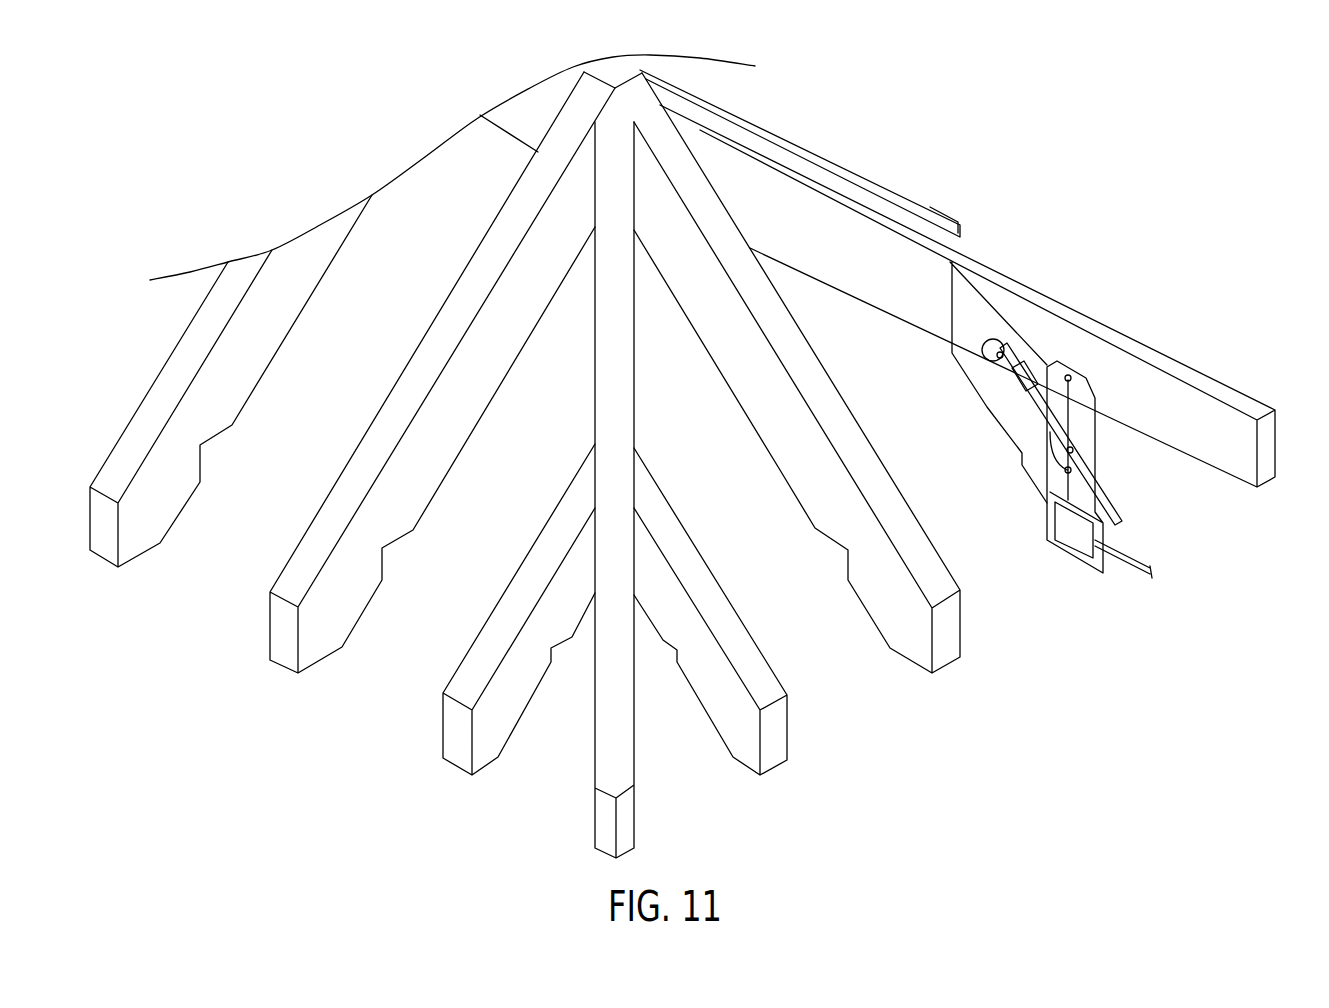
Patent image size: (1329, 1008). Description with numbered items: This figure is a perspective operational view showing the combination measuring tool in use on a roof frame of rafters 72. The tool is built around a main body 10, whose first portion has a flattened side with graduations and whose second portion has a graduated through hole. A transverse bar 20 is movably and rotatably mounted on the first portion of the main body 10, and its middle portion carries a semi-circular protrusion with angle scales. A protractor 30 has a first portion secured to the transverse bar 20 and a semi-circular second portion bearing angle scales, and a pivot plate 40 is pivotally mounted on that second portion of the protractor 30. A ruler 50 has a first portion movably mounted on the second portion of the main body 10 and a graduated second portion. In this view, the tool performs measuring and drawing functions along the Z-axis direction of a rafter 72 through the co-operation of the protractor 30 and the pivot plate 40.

The main body 10 is at (1100, 387).
The transverse bar 20 is at (1100, 492).
The protractor 30 is at (995, 370).
The pivot plate 40 is at (1017, 346).
The ruler 50 is at (1157, 570).
The rafter 72 is at (325, 622).